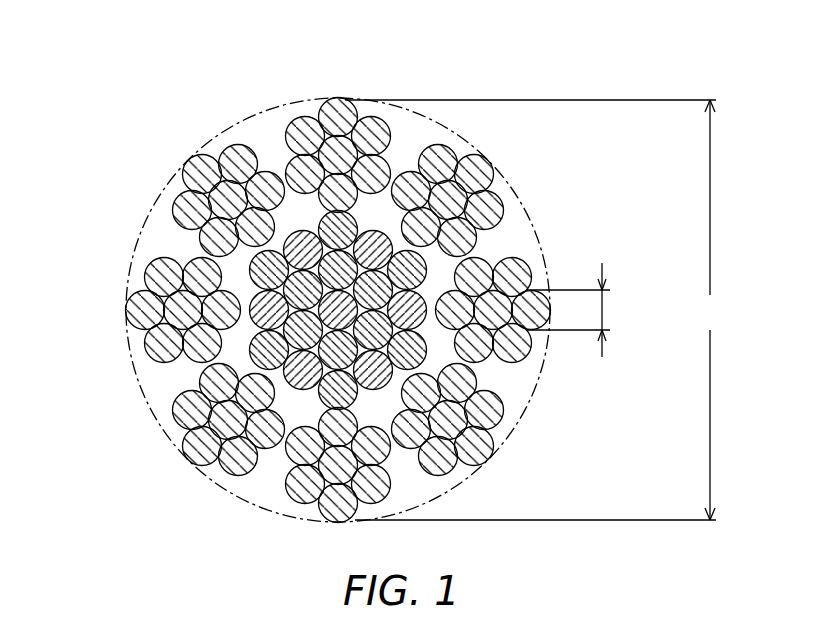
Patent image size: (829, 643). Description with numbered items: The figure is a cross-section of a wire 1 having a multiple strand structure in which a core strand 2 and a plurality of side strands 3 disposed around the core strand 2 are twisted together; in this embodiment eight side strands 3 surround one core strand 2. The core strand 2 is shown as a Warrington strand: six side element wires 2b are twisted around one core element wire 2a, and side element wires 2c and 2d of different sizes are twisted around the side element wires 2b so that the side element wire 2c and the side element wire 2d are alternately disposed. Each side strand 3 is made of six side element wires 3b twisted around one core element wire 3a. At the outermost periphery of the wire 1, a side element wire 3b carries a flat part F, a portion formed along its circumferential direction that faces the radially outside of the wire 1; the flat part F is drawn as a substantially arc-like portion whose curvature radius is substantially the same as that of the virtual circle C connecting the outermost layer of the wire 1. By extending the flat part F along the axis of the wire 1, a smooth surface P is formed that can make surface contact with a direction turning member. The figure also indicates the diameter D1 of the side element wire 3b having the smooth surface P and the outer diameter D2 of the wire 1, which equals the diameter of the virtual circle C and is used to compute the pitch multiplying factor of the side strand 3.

The wire 1 is at (460, 45).
The core strand 2 is at (240, 395).
The core element wire of core strand 2a is at (325, 316).
The side element wire of core strand 2b is at (292, 342).
The side element wire of core strand 2c is at (292, 385).
The side element wire of core strand 2d is at (322, 398).
The side strand 3 is at (199, 133).
The core element wire of side strand 3a is at (231, 186).
The side element wire of side strand 3b is at (211, 160).
The virtual circle C is at (512, 190).
The diameter of side element wire of side strand D1 is at (606, 311).
The outer diameter of wire D2 is at (536, 310).
The flat part F is at (197, 140).
The smooth surface P is at (182, 168).